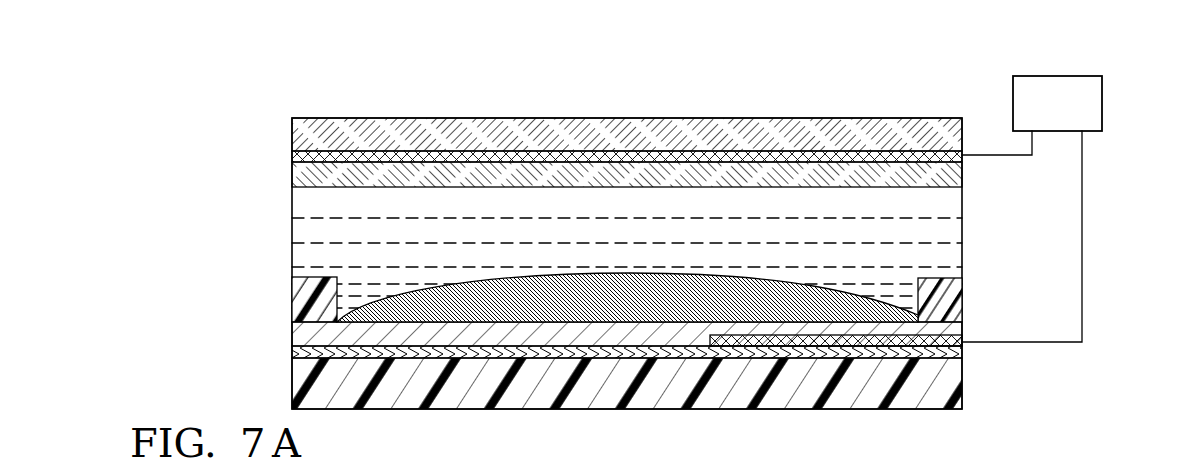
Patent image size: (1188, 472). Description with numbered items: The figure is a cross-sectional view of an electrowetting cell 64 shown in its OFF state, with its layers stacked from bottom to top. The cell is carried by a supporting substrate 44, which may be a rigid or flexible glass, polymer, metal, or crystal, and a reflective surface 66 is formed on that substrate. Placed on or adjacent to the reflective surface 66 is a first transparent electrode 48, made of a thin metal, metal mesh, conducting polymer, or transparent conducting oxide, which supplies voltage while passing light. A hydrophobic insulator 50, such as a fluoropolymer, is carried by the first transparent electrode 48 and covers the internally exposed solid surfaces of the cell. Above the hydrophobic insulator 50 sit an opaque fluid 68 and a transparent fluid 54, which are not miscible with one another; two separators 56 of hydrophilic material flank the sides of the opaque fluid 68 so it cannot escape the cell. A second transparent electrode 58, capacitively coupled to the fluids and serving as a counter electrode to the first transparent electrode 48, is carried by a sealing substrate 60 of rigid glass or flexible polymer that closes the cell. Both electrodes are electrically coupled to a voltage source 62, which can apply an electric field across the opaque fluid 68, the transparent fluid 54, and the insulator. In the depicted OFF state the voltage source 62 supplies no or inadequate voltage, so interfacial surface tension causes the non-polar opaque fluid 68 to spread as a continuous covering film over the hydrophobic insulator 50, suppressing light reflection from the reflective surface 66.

The supporting substrate 44 is at (292, 385).
The first transparent electrode 48 is at (925, 348).
The hydrophobic insulator 50 is at (292, 336).
The transparent fluid 54 is at (920, 218).
The separator 56 is at (300, 298).
The second transparent electrode 58 is at (292, 156).
The sealing substrate 60 is at (855, 121).
The voltage source 62 is at (1065, 77).
The electrowetting cell 64 is at (286, 98).
The reflective surface 66 is at (292, 353).
The opaque fluid 68 is at (440, 286).